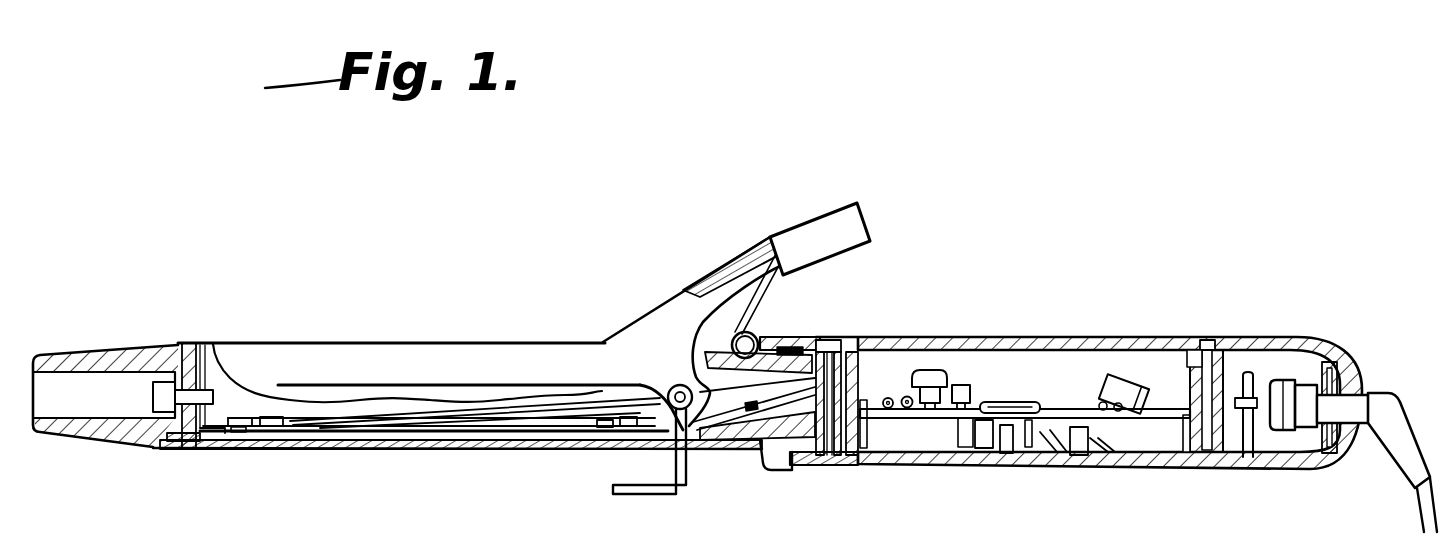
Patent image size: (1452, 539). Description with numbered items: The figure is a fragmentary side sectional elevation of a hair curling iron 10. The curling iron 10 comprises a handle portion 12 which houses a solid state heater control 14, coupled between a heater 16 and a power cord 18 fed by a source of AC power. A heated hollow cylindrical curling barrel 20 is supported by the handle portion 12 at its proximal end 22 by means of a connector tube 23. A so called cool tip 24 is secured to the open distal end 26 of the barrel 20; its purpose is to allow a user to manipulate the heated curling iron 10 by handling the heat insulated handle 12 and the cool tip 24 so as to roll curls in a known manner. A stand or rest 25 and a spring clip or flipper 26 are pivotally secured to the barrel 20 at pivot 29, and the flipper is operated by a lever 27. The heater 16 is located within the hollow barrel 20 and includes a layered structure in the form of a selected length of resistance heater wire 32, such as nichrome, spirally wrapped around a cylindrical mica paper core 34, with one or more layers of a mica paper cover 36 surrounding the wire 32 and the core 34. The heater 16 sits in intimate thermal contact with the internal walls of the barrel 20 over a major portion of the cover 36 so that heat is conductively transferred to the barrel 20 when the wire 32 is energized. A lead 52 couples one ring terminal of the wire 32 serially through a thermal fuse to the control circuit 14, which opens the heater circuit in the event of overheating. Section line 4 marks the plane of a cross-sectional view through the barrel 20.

The section line 4- 4 is at (218, 302).
The curling iron 10 is at (1226, 276).
The handle portion 12 is at (1048, 336).
The solid state heater control 14 is at (1035, 402).
The heater 16 is at (420, 447).
The power cord 18 is at (548, 447).
The curling barrel 20 is at (597, 450).
The proximal end 22 is at (773, 472).
The connector tube 23 is at (743, 457).
The cool tip 24 is at (155, 447).
The stand or rest 25 is at (653, 495).
The spring clip or flipper 26 is at (173, 453).
The clamp lever 27 is at (818, 232).
The pivot 29 is at (680, 390).
The resistance heater wire 32 is at (497, 447).
The mica paper core 34 is at (587, 388).
The mica paper cover 36 is at (370, 447).
The lead 52 is at (232, 452).